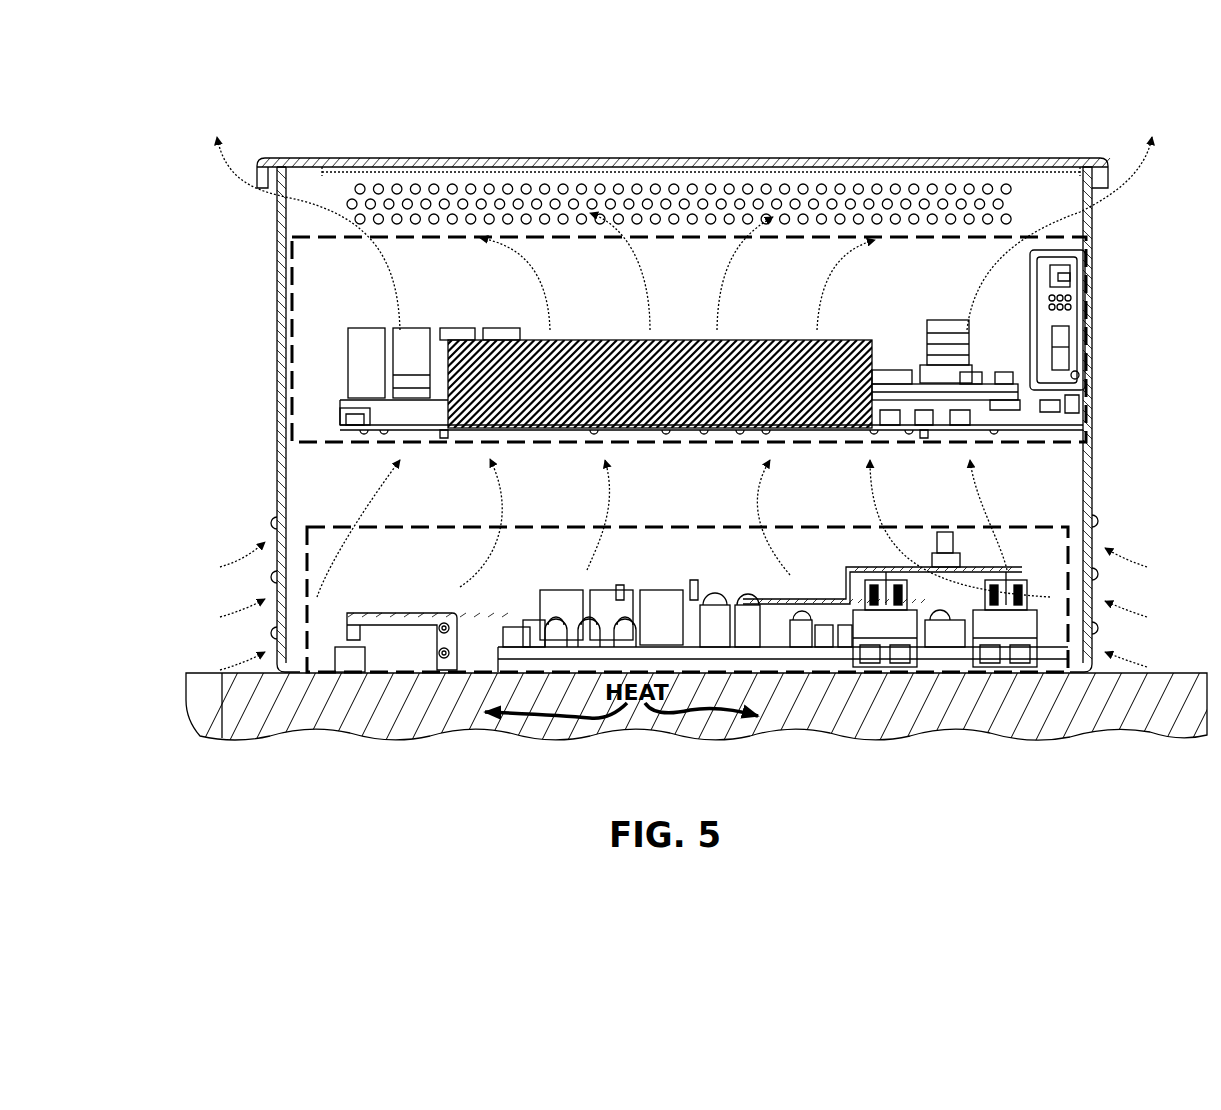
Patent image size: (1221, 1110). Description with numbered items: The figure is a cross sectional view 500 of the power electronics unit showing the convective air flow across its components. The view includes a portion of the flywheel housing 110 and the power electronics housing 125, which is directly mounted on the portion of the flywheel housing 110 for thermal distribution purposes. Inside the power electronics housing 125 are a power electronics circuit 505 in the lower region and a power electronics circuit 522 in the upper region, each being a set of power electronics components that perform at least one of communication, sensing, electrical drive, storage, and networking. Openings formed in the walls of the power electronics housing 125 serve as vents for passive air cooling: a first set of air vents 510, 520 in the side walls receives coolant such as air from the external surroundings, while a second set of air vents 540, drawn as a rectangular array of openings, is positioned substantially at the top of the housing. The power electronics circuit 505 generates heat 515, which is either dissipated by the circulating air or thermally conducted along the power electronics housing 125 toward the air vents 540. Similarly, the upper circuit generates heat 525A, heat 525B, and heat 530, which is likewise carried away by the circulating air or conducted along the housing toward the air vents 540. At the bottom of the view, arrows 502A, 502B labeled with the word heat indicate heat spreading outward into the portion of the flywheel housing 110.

The cross sectional view 500 is at (699, 73).
The portion of the flywheel housing 110 is at (297, 714).
The power electronics housing 125 is at (282, 328).
The power electronics circuit 505 is at (1071, 642).
The power electronics circuit 522 is at (1093, 328).
The air vent 510 is at (1099, 521).
The air vent 520 is at (268, 518).
The air vents 540 is at (860, 203).
The heat 515 is at (618, 500).
The heat 525A is at (400, 290).
The heat 525B is at (1110, 201).
The heat 530 is at (677, 271).
The heat flow direction 502A is at (520, 714).
The heat flow direction 502B is at (736, 713).